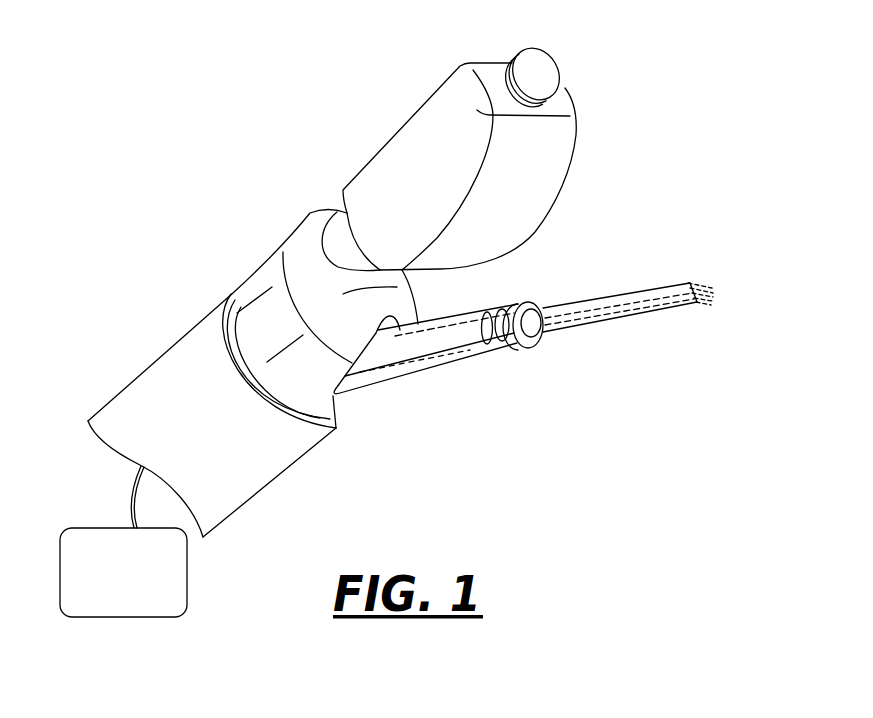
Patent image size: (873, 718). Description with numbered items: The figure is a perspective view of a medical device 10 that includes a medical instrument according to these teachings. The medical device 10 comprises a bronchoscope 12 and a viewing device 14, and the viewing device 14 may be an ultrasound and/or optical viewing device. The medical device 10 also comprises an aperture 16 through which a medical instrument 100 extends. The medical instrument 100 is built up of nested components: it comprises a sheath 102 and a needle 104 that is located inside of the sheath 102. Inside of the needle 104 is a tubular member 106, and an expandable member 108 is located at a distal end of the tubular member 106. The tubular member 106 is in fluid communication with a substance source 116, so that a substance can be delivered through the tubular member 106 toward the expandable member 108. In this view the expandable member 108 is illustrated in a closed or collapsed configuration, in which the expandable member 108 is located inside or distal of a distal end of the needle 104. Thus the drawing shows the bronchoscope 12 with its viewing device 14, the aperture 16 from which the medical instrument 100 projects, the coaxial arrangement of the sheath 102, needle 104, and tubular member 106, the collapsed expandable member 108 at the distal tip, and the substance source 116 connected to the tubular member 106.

The medical device 10 is at (276, 94).
The bronchoscope 12 is at (177, 341).
The viewing device 14 is at (495, 74).
The aperture 16 is at (351, 391).
The medical instrument 100 is at (557, 237).
The sheath 102 is at (456, 345).
The needle 104 is at (554, 320).
The tubular member 106 is at (611, 304).
The expandable member 108 is at (691, 310).
The substance source 116 is at (123, 541).